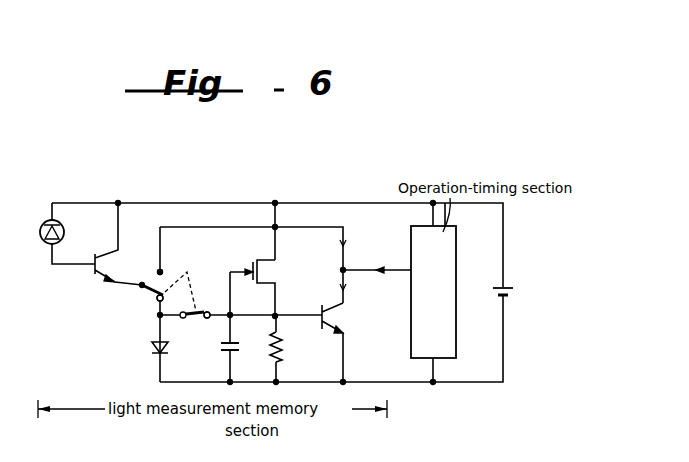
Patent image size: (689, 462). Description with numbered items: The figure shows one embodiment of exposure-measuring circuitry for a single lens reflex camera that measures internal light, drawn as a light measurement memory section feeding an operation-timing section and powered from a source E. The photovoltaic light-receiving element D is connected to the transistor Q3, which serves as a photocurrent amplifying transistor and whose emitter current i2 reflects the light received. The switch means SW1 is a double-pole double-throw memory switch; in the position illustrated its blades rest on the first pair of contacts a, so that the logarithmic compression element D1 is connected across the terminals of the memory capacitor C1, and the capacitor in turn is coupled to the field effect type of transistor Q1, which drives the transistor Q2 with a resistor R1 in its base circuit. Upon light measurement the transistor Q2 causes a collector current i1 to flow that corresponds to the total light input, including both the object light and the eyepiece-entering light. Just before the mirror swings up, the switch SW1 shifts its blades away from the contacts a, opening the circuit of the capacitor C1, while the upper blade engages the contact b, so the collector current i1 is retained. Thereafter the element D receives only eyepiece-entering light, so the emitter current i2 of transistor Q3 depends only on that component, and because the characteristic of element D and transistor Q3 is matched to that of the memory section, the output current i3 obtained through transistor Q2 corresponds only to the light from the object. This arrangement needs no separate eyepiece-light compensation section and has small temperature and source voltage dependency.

The light-receiving element D is at (45, 242).
The transistor Q3 is at (109, 279).
The switch means SW1 is at (186, 272).
The first pair of contacts a is at (214, 306).
The contact b is at (166, 265).
The memory capacitor C1 is at (221, 350).
The logarithmic compression element D1 is at (150, 350).
The field effect type of transistor Q1 is at (274, 272).
The transistor Q2 is at (340, 322).
The resistor R1 is at (286, 349).
The collector current i1 is at (349, 295).
The emitter current i2 is at (332, 248).
The output current i3 is at (390, 266).
The power source battery E is at (508, 300).